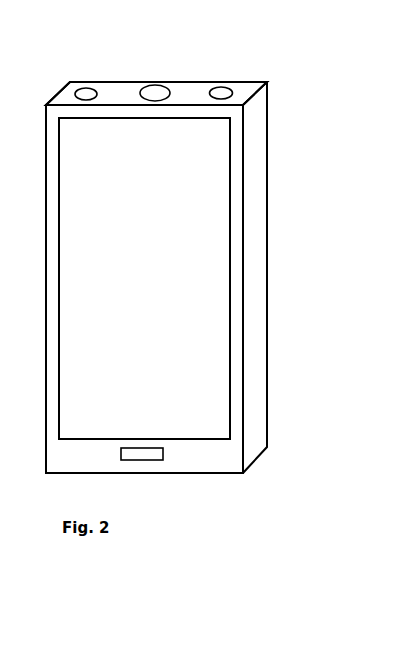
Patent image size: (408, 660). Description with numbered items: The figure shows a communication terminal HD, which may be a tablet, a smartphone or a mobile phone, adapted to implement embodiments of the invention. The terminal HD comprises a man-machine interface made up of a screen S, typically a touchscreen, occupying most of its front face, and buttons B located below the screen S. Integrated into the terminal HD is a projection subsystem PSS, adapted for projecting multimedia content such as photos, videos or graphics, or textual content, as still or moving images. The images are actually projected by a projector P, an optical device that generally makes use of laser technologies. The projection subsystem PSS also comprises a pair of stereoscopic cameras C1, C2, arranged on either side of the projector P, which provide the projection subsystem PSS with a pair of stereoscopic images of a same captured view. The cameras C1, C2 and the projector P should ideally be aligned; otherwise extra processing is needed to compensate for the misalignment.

The communication terminal HD is at (263, 320).
The screen S is at (130, 232).
The buttons B is at (137, 452).
The stereoscopic camera C1 is at (83, 94).
The projector P is at (150, 93).
The stereoscopic camera C2 is at (218, 93).
The projection subsystem PSS is at (200, 82).